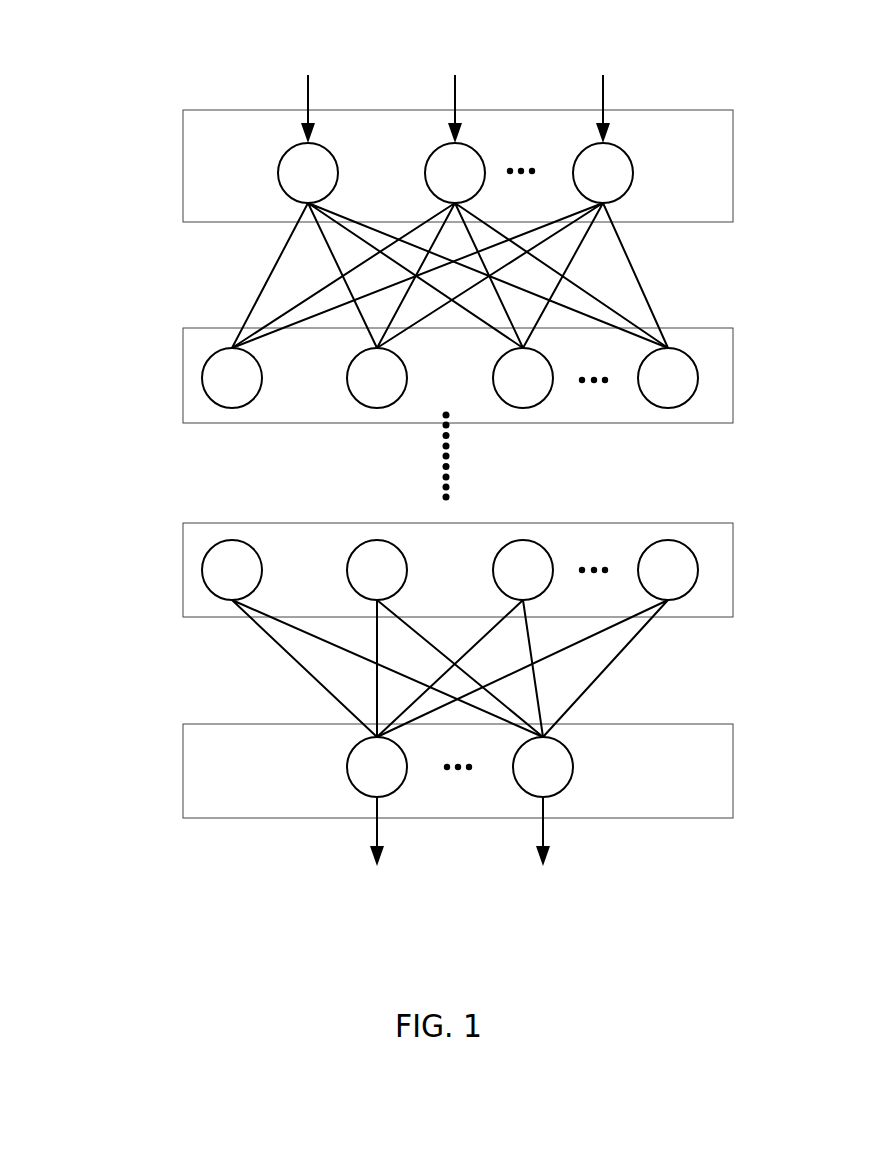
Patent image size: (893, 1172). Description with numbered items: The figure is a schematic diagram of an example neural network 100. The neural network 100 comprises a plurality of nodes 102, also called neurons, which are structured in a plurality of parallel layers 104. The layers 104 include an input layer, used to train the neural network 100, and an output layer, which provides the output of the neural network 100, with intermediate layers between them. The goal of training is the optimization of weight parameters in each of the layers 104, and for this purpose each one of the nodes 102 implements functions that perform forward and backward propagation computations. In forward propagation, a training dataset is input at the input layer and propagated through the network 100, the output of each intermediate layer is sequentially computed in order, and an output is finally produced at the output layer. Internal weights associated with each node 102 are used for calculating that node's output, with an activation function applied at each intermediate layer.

The neural network 100 is at (106, 107).
The nodes 102 is at (297, 172).
The parallel layers 104 is at (707, 724).